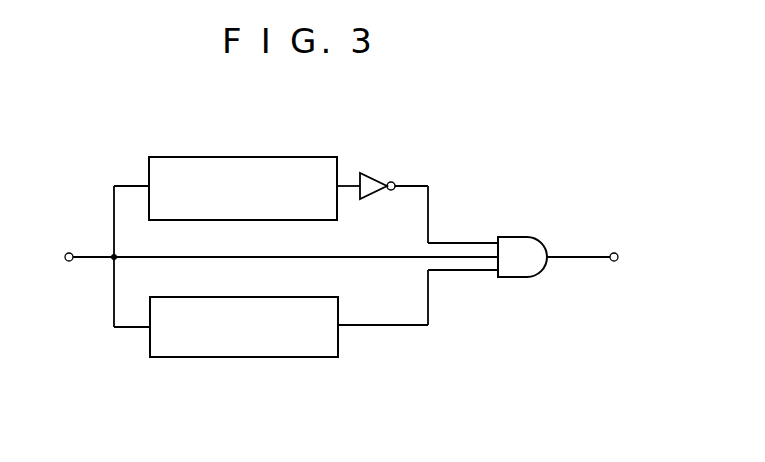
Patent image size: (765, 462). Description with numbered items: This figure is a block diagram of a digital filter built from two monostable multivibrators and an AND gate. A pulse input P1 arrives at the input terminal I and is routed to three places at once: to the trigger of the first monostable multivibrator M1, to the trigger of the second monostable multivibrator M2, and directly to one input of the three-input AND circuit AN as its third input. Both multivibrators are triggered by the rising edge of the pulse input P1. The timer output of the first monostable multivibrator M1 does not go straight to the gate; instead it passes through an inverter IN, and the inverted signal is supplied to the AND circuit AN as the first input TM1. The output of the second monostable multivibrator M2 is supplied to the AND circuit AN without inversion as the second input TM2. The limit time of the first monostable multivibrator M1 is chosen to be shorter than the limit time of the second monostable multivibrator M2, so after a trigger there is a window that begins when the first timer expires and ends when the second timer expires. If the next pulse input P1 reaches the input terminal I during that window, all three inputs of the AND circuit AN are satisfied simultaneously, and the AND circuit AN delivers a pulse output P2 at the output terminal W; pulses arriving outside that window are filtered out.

The input terminal I is at (66, 252).
The pulse input P1 is at (90, 259).
The first monostable multivibrator M1 is at (230, 157).
The second monostable multivibrator M2 is at (243, 357).
The inverter IN is at (374, 174).
The first input TM1 is at (428, 208).
The second input TM2 is at (428, 305).
The three-input AND circuit AN is at (528, 237).
The pulse output P2 is at (573, 259).
The output terminal W is at (614, 252).